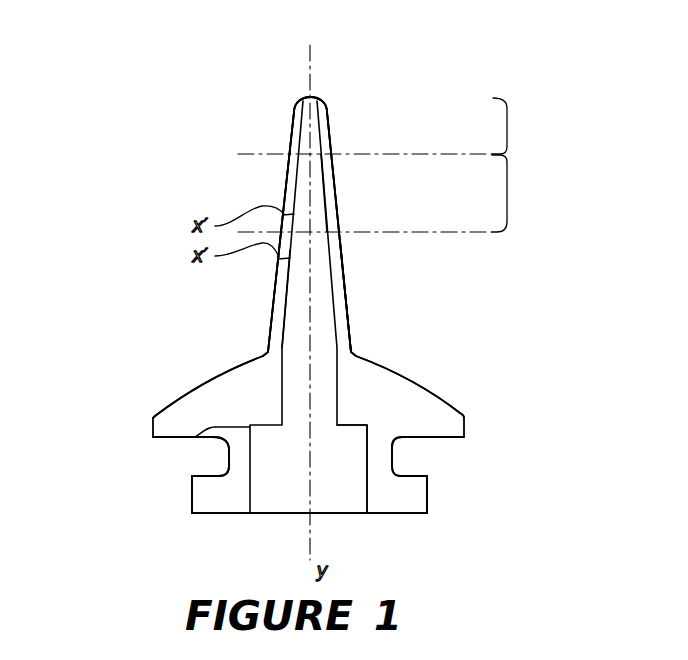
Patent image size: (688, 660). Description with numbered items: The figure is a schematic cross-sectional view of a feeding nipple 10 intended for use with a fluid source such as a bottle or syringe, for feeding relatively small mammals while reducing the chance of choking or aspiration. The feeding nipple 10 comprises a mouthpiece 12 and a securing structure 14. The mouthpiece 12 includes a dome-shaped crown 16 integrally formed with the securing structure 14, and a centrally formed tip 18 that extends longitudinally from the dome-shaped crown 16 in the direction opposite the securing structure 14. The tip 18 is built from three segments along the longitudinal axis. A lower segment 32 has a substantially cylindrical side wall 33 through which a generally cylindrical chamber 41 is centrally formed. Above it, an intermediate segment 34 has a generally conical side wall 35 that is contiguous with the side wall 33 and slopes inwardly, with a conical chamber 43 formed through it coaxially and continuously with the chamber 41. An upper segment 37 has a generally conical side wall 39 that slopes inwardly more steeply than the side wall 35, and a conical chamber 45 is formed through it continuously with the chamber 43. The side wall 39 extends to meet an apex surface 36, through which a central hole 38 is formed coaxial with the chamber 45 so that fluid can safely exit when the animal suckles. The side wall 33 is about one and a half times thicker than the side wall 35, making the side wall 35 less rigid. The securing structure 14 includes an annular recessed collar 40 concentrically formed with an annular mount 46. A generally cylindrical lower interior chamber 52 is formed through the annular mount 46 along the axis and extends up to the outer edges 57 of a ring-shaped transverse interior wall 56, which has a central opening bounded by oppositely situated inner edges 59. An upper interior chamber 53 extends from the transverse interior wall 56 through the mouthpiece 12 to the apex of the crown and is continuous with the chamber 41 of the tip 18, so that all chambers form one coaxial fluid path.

The feeding nipple 10 is at (424, 71).
The mouthpiece 12 is at (123, 346).
The securing structure 14 is at (123, 527).
The dome-shaped crown 16 is at (371, 383).
The tip 18 is at (373, 171).
The lower segment 32 is at (363, 335).
The side wall 33 is at (344, 267).
The intermediate segment 34 is at (508, 195).
The side wall 35 is at (288, 181).
The apex surface 36 is at (312, 95).
The upper segment 37 is at (508, 118).
The hole 38 is at (309, 95).
The side wall 39 is at (321, 127).
The annular recessed collar 40 is at (372, 472).
The chamber 41 is at (299, 290).
The chamber 43 is at (320, 201).
The chamber 45 is at (304, 129).
The annular mount 46 is at (432, 497).
The lower interior chamber 52 is at (263, 506).
The upper interior chamber 53 is at (290, 384).
The transverse interior wall 56 is at (370, 424).
The outer edges 57 is at (196, 437).
The inner edges 59 is at (285, 413).